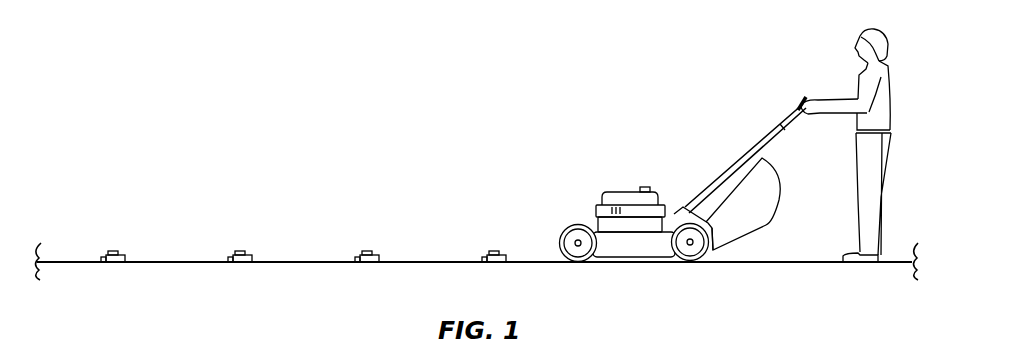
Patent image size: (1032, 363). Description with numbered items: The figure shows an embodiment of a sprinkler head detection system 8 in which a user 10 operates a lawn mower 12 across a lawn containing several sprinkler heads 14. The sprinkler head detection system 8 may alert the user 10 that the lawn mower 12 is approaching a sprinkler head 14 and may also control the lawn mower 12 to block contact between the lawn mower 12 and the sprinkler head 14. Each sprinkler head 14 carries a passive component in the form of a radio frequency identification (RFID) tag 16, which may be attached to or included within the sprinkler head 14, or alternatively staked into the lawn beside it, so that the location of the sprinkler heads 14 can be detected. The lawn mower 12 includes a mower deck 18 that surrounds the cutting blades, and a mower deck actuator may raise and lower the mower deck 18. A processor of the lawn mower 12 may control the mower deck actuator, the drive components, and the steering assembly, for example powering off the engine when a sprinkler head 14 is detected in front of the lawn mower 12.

The sprinkler head detection system 8 is at (155, 44).
The user 10 is at (877, 29).
The lawn mower 12 is at (683, 163).
The sprinkler head 14 is at (121, 251).
The radio frequency identification (RFID) tag 16 is at (102, 258).
The mower deck 18 is at (631, 190).